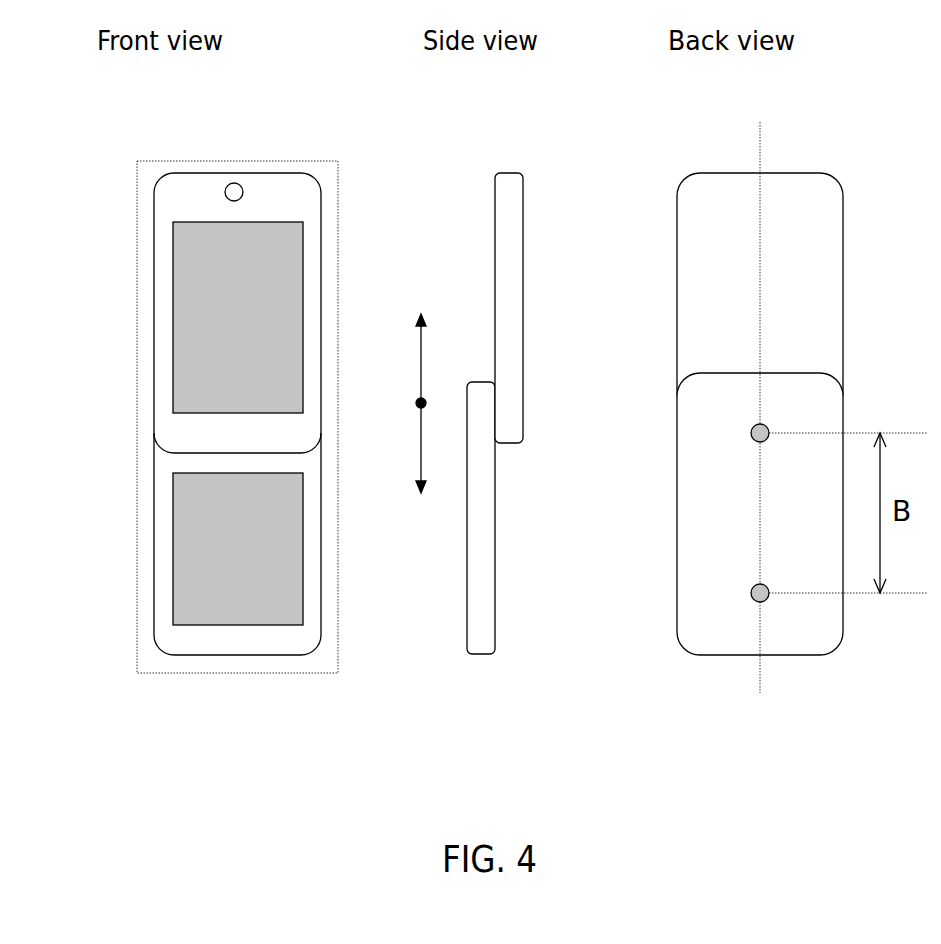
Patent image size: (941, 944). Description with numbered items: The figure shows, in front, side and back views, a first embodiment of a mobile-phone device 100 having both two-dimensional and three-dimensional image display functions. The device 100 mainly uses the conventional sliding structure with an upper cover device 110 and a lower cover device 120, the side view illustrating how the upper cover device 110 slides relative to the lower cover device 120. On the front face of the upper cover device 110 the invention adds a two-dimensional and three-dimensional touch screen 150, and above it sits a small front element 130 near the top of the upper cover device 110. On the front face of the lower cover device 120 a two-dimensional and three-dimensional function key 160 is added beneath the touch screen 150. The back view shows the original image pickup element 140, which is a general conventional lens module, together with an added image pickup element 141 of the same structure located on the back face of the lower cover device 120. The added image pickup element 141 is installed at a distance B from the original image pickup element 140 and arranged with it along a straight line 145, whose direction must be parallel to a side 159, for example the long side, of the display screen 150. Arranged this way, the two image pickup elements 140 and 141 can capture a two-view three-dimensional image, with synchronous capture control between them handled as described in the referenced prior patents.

The device 100 is at (265, 394).
The upper cover device 110 is at (470, 269).
The lower cover device 120 is at (470, 561).
The front camera 130 is at (204, 145).
The original image pickup element 140 is at (728, 384).
The image pickup element 141 is at (728, 544).
The straight line 145 is at (795, 404).
The 2D and 3D touch screen 150 is at (234, 317).
The side of the display screen 159 is at (303, 312).
The 2D and 3D function key 160 is at (173, 557).